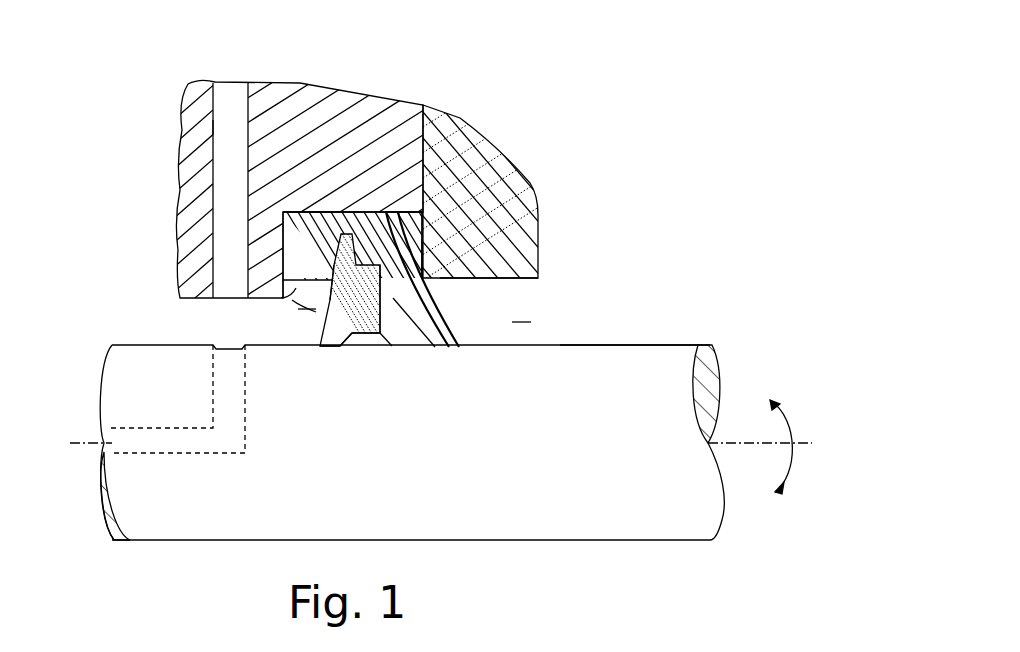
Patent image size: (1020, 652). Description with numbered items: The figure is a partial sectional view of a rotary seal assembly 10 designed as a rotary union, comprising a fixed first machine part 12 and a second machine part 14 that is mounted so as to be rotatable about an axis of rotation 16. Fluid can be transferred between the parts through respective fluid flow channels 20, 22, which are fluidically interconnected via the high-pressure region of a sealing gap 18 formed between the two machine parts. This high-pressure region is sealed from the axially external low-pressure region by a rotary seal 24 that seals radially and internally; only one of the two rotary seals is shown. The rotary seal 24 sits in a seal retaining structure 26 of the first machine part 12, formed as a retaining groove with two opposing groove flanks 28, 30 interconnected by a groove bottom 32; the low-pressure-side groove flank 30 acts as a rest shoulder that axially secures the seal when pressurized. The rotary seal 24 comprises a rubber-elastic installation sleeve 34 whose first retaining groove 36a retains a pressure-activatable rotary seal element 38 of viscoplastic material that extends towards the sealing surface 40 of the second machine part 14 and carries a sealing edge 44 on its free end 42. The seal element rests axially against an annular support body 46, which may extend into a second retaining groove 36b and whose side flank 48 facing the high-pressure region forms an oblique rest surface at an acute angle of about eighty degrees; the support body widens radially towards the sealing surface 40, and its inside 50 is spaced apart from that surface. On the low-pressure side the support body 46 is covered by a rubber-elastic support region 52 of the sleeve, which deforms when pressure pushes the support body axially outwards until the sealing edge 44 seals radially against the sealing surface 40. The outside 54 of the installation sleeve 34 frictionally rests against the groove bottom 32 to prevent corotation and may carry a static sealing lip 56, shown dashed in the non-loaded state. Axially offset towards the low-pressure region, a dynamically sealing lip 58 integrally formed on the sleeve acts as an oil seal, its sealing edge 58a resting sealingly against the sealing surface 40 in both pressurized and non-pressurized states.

The rotary seal assembly 10 is at (557, 105).
The first machine part 12 is at (290, 112).
The second machine part 14 is at (572, 455).
The axis of rotation 16 is at (738, 443).
The sealing gap 18 is at (481, 312).
The fluid flow channel 20 is at (215, 126).
The fluid flow channel 22 is at (132, 432).
The rotary seal 24 is at (470, 190).
The seal retaining structure 26 is at (286, 240).
The groove flank 28 is at (292, 292).
The groove flank 30 is at (413, 270).
The groove bottom 32 is at (420, 190).
The installation sleeve 34 is at (330, 212).
The first retaining groove 36a is at (300, 262).
The second retaining groove 36b is at (368, 336).
The rotary seal element 38 is at (332, 342).
The sealing surface 40 is at (636, 345).
The free end 42 is at (330, 326).
The sealing edge 44 is at (341, 346).
The support body 46 is at (380, 338).
The side flank 48 is at (328, 305).
The inside 50 is at (396, 346).
The support region 52 is at (400, 334).
The outside 54 is at (354, 213).
The static sealing lip 56 is at (397, 210).
The sealing lip 58 is at (462, 322).
The sealing edge 58a is at (436, 336).